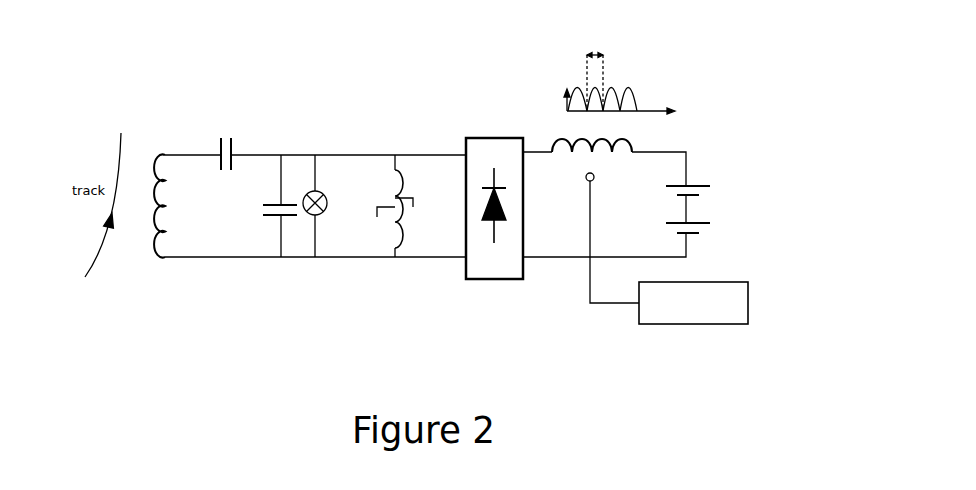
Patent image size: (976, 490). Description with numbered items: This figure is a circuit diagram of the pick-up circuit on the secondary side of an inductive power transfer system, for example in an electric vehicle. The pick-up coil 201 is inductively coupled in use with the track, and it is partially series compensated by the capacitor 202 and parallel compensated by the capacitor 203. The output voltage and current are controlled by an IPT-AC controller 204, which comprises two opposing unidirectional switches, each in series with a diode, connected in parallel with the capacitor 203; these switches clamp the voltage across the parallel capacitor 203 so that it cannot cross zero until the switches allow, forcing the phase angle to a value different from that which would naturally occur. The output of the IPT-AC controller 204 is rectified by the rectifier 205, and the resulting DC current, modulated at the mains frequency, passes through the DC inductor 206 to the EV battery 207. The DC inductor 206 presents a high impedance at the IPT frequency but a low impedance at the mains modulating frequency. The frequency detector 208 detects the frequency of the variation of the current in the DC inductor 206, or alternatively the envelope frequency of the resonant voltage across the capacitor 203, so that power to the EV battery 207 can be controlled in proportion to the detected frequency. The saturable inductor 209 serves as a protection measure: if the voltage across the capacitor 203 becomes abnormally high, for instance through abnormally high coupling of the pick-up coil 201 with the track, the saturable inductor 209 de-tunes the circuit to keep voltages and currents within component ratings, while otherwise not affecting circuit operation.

The pick-up coil 201 is at (174, 205).
The capacitor 202 is at (241, 151).
The capacitor 203 is at (260, 206).
The IPT-AC controller 204 is at (330, 343).
The rectifier 205 is at (494, 208).
The DC inductor 206 is at (609, 169).
The EV battery 207 is at (711, 202).
The frequency detector 208 is at (693, 295).
The saturable inductor 209 is at (432, 323).